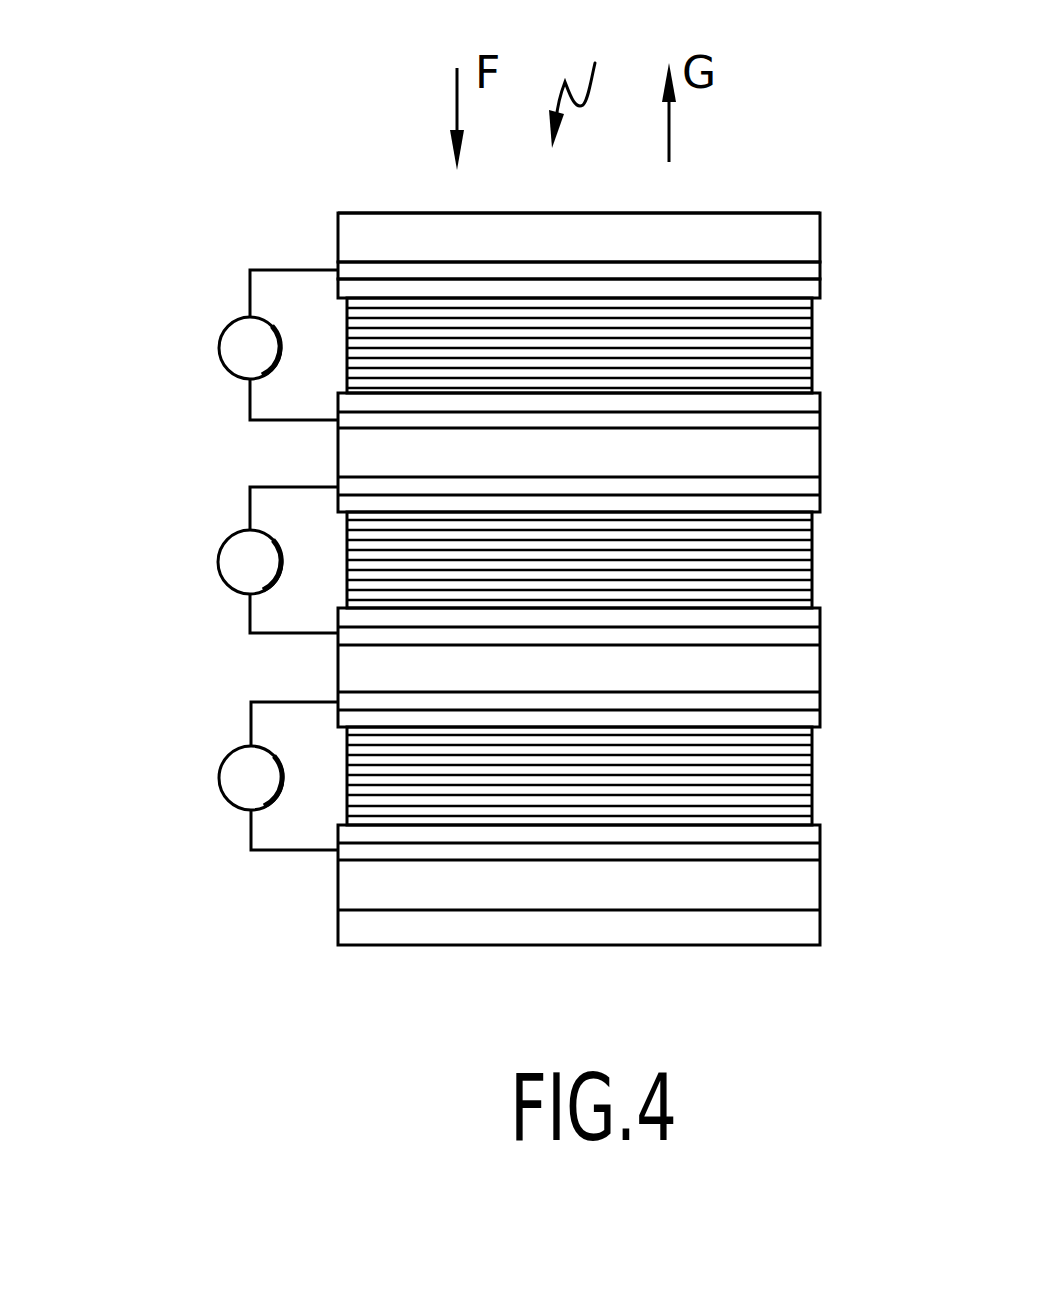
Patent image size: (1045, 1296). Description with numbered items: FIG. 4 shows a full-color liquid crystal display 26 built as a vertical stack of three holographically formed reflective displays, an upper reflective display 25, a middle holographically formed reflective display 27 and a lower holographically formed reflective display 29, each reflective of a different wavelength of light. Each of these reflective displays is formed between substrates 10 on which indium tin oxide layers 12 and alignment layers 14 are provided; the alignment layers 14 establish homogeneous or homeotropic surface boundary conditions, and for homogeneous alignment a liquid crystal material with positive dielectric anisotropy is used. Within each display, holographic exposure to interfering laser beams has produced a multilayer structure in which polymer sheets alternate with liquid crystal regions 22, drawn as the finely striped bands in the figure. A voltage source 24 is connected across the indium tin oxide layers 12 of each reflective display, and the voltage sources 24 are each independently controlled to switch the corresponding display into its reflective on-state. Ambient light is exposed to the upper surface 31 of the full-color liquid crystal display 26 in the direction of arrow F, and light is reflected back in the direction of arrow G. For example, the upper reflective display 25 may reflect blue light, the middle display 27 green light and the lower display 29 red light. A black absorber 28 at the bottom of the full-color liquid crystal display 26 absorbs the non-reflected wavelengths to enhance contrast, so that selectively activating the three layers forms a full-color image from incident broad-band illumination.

The substrate 10 is at (357, 228).
The indium tin oxide layer 12 is at (338, 268).
The alignment layer 14 is at (813, 288).
The liquid crystal region 22 is at (813, 342).
The voltage source 24 is at (230, 327).
The upper reflective display 25 is at (818, 215).
The full-color liquid crystal display 26 is at (585, 76).
The middle holographically formed reflective display 27 is at (803, 457).
The black absorber 28 is at (808, 930).
The lower holographically formed reflective display 29 is at (803, 668).
The upper surface 31 is at (718, 213).